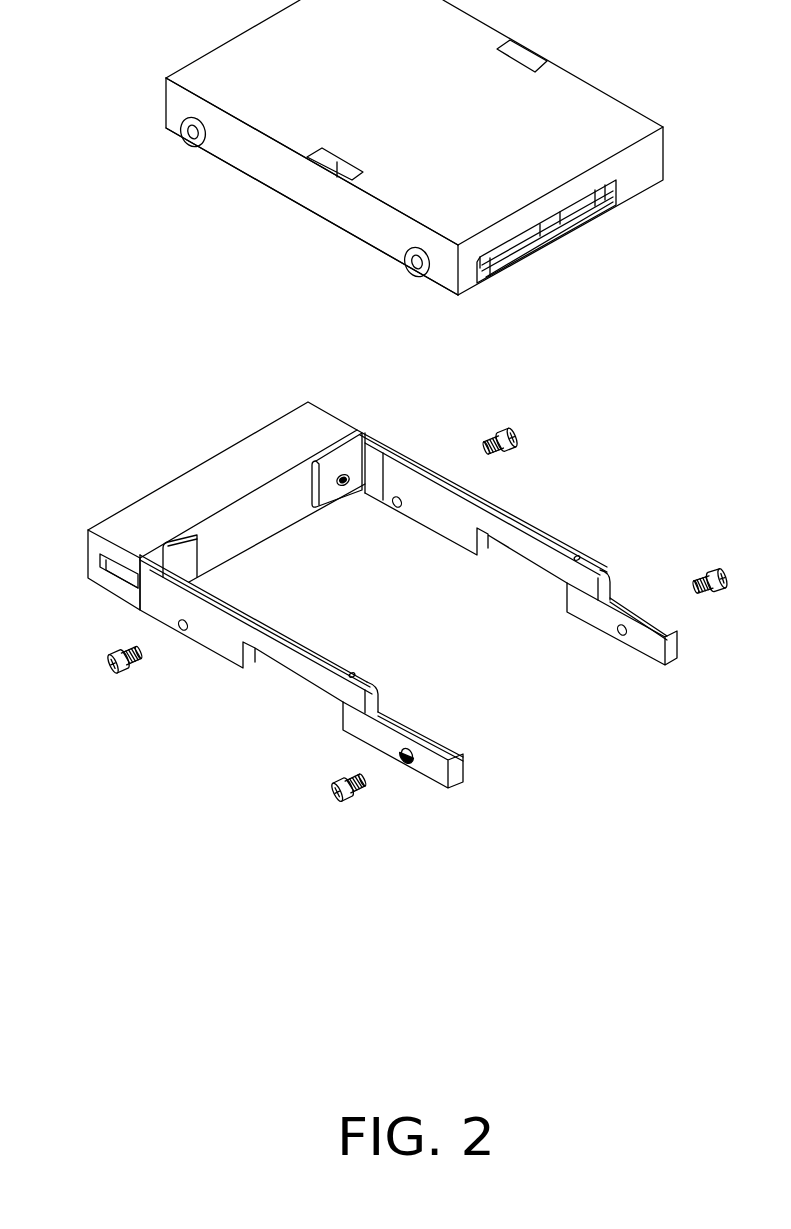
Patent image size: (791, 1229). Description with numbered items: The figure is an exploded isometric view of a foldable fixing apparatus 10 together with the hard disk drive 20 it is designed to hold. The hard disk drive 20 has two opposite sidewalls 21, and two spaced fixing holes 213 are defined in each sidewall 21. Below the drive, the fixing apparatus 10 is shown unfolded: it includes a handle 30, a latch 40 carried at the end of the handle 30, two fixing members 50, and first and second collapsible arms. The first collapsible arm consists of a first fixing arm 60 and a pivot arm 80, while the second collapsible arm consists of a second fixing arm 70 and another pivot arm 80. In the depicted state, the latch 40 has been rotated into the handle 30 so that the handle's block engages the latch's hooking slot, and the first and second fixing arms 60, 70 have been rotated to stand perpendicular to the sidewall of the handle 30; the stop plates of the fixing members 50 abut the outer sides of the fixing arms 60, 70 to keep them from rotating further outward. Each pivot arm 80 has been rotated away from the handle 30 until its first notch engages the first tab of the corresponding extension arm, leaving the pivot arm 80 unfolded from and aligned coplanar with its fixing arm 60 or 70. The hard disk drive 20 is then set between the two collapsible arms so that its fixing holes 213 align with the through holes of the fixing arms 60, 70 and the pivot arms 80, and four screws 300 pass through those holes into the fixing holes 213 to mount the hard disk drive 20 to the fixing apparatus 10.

The fixing apparatus 10 is at (107, 457).
The hard disk drive 20 is at (577, 108).
The sidewall 21 is at (297, 182).
The fixing hole 213 is at (184, 138).
The handle 30 is at (233, 467).
The latch 40 is at (120, 570).
The fixing member 50 is at (370, 458).
The first fixing arm 60 is at (233, 647).
The second fixing arm 70 is at (465, 535).
The pivot arm 80 is at (437, 767).
The screw 300 is at (110, 662).